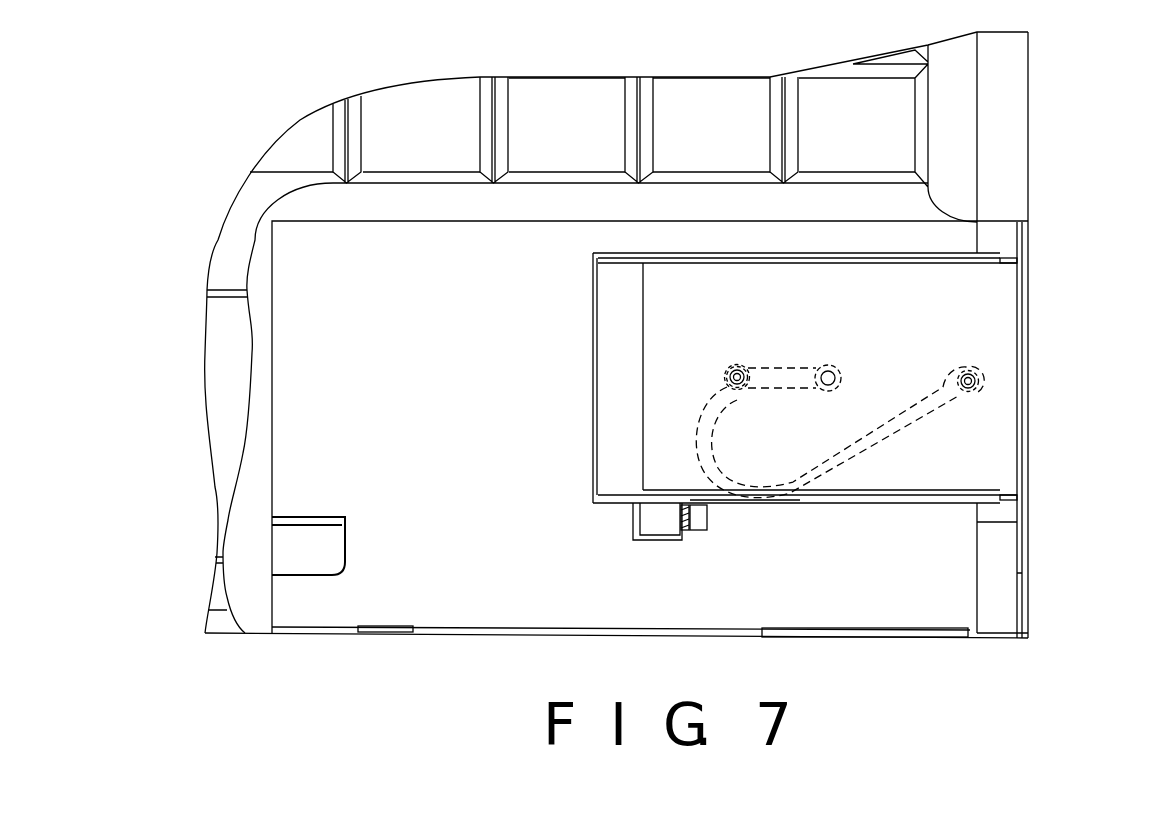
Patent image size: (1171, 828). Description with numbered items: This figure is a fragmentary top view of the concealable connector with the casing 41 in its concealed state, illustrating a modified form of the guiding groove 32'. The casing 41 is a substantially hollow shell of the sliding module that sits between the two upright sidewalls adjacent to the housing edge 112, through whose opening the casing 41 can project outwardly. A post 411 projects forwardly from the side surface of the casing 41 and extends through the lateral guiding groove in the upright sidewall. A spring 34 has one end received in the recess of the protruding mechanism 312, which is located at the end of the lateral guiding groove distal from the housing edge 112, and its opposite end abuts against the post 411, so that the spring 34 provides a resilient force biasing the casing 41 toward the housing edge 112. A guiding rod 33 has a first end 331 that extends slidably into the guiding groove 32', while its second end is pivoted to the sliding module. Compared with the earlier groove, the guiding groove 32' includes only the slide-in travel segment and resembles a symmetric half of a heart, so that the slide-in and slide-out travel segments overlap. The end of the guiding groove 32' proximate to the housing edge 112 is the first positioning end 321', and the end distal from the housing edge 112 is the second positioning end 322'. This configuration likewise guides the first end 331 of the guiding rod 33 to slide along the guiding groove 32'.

The casing 41 is at (988, 312).
The post 411 is at (700, 530).
The housing edge 112 is at (1027, 610).
The protruding mechanism 312 is at (655, 537).
The spring 34 is at (683, 530).
The guiding rod 33 is at (772, 367).
The first end 331 is at (733, 365).
The guiding groove 32' is at (745, 431).
The first positioning end 321' is at (1033, 396).
The second positioning end 322' is at (637, 356).